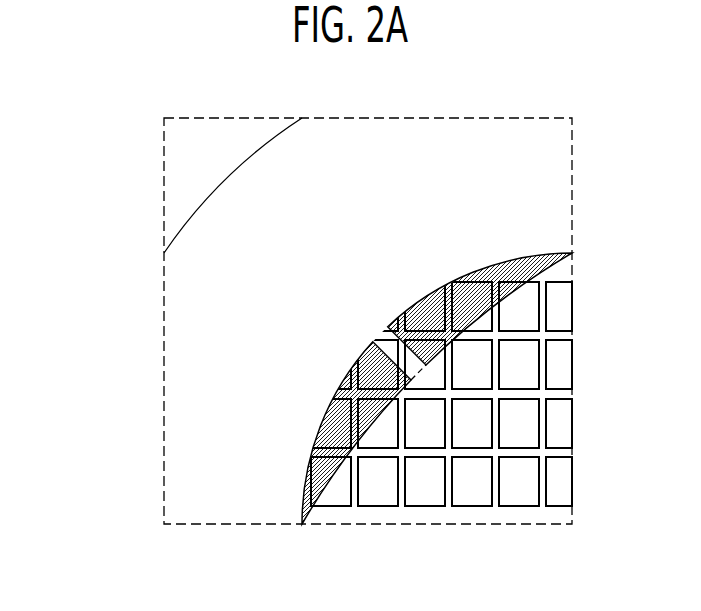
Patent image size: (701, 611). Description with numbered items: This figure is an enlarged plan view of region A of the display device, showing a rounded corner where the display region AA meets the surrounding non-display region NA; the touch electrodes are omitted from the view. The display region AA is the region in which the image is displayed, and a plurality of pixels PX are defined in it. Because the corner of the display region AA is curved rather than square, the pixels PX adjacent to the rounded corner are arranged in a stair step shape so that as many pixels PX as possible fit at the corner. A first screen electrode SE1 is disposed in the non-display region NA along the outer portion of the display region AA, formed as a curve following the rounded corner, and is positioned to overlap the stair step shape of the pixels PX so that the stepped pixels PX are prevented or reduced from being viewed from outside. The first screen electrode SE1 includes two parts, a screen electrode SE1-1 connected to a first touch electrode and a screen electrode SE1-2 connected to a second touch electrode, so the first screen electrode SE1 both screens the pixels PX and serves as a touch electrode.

The region A is at (450, 118).
The non-display region NA is at (203, 516).
The display region AA is at (468, 430).
The pixel PX is at (533, 311).
The first screen electrode SE1 is at (307, 388).
The (1-1)th screen electrode SE1-1 is at (335, 408).
The (1-2)th screen electrode SE1-2 is at (418, 313).